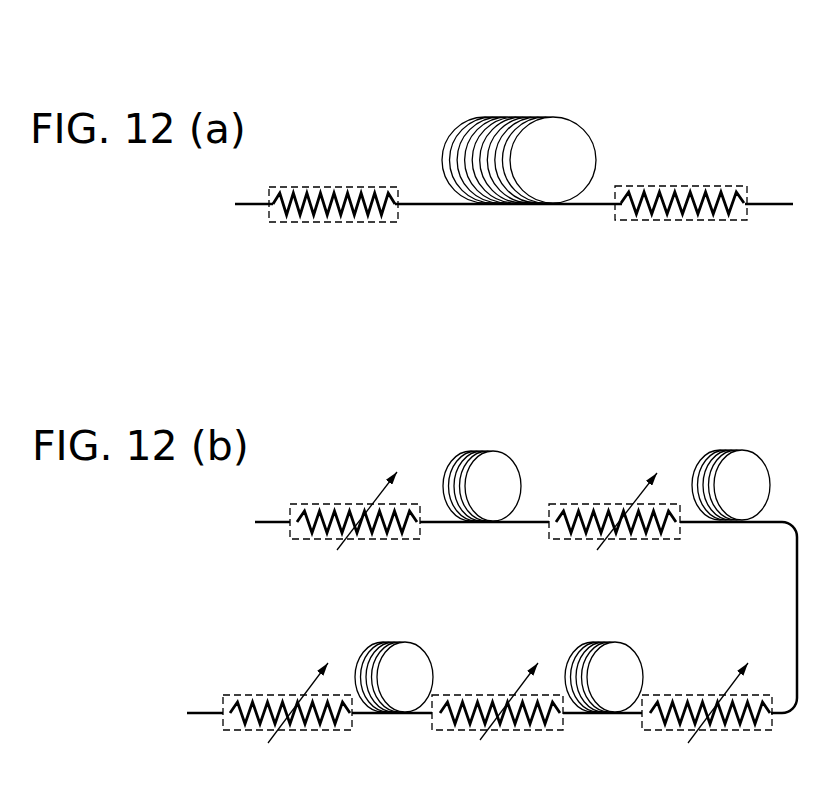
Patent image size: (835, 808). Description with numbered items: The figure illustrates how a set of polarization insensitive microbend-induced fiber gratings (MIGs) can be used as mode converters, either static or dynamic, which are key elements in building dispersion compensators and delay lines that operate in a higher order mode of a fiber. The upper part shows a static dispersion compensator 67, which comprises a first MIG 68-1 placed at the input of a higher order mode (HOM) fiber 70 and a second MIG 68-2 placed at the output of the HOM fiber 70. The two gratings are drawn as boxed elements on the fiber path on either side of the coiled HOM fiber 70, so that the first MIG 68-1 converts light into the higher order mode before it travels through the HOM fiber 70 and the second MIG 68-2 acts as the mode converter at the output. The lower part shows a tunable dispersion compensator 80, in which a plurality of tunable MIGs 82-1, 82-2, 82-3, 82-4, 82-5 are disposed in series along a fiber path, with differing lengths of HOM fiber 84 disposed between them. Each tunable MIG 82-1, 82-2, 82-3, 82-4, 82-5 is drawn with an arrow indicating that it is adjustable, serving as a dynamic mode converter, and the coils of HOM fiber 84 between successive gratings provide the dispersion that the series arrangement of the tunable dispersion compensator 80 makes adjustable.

The static dispersion compensator 67 is at (410, 100).
The first MIG 68-1 is at (333, 185).
The second MIG 68-2 is at (680, 185).
The higher order mode (HOM) fiber 70 is at (565, 133).
The tunable dispersion compensator 80 is at (392, 422).
The tunable MIG 82-1 is at (305, 540).
The tunable MIG 82-2 is at (563, 540).
The tunable MIG 82-3 is at (655, 731).
The tunable MIG 82-4 is at (447, 731).
The tunable MIG 82-5 is at (238, 731).
The HOM fiber 84 is at (494, 473).